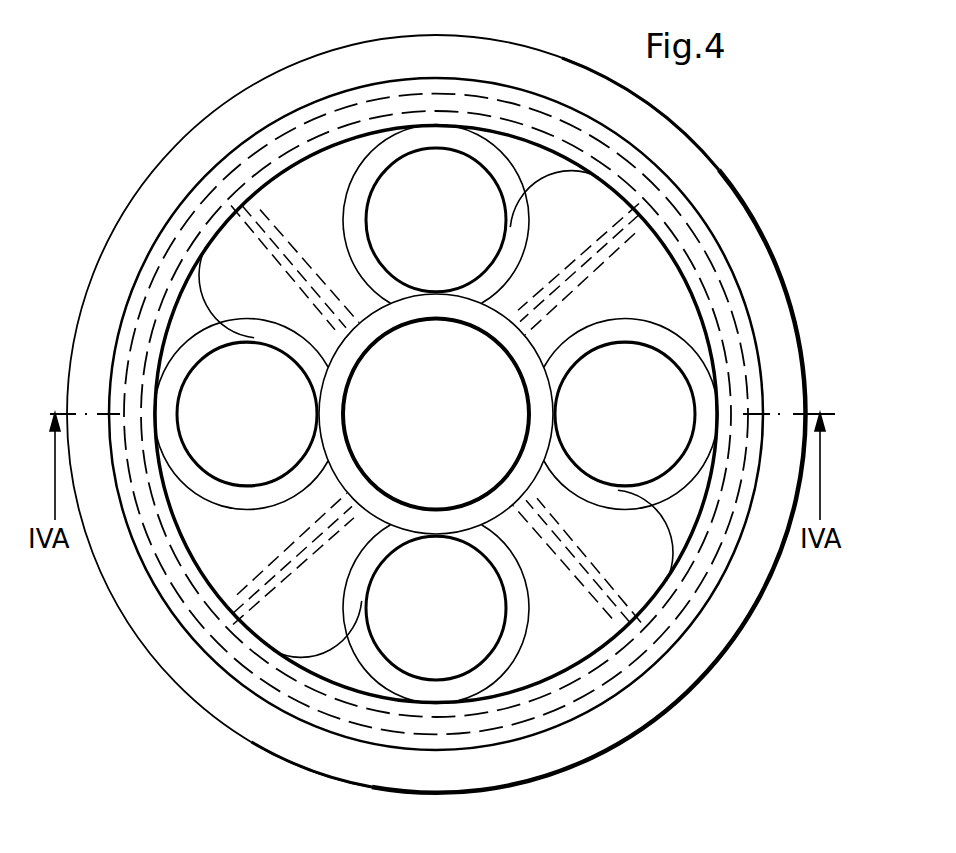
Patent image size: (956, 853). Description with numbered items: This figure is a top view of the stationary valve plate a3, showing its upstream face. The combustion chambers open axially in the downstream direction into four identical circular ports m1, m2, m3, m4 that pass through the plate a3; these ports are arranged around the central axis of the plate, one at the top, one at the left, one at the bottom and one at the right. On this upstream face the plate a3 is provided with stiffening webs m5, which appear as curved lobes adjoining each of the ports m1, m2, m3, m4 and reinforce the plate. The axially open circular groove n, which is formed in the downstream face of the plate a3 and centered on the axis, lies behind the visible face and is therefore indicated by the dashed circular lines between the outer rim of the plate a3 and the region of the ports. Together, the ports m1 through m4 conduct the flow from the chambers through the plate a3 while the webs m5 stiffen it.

The circular port m1 is at (448, 243).
The circular port m2 is at (260, 436).
The circular port m3 is at (448, 628).
The circular port m4 is at (640, 436).
The stiffening web m5 is at (526, 172).
The circular groove n is at (655, 202).
The valve plate a3 is at (767, 262).